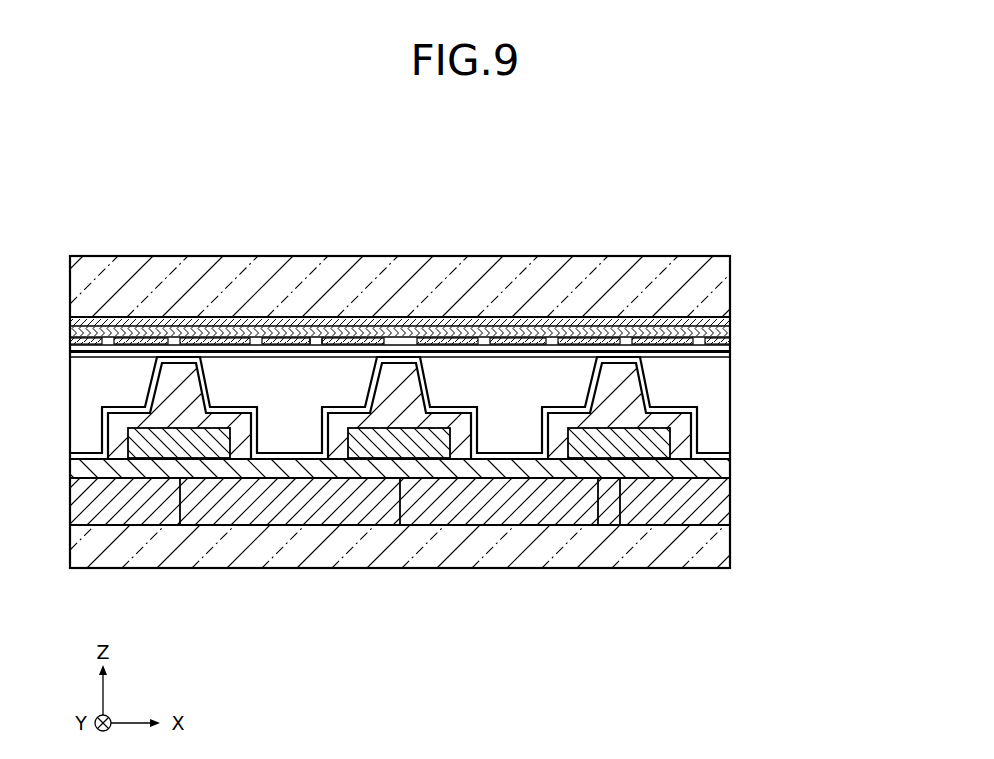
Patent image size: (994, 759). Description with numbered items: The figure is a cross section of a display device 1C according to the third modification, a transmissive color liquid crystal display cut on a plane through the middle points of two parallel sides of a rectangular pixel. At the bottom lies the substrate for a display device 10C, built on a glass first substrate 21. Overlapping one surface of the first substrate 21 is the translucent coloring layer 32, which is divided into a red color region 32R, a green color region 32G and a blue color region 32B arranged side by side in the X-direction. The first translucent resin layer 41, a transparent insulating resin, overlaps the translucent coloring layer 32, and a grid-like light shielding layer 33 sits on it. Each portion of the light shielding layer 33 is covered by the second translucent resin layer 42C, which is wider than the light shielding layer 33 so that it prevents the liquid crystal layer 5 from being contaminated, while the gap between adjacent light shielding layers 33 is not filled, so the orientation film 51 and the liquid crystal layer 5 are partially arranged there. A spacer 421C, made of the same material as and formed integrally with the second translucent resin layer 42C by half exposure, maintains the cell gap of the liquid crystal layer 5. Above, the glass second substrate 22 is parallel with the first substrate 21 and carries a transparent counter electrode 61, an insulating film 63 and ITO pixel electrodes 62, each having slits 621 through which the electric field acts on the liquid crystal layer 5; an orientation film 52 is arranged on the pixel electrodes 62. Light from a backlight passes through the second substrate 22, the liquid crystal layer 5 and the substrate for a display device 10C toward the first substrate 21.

The display device 1C is at (666, 184).
The second substrate 22 is at (718, 275).
The counter electrode 61 is at (722, 321).
The insulating film 63 is at (722, 330).
The pixel electrode 62 is at (85, 340).
The slit 621 is at (323, 335).
The orientation film 52 is at (724, 350).
The liquid crystal layer 5 is at (712, 390).
The second translucent resin layer 42C is at (558, 453).
The spacer 421C is at (178, 372).
The light shielding layer 33 is at (596, 443).
The orientation film 51 is at (724, 456).
The first translucent resin layer 41 is at (712, 466).
The translucent coloring layer 32 is at (426, 547).
The color region 32R is at (124, 505).
The color region 32G is at (281, 505).
The color region 32B is at (507, 505).
The first substrate 21 is at (712, 545).
The substrate for a display device 10C is at (787, 410).